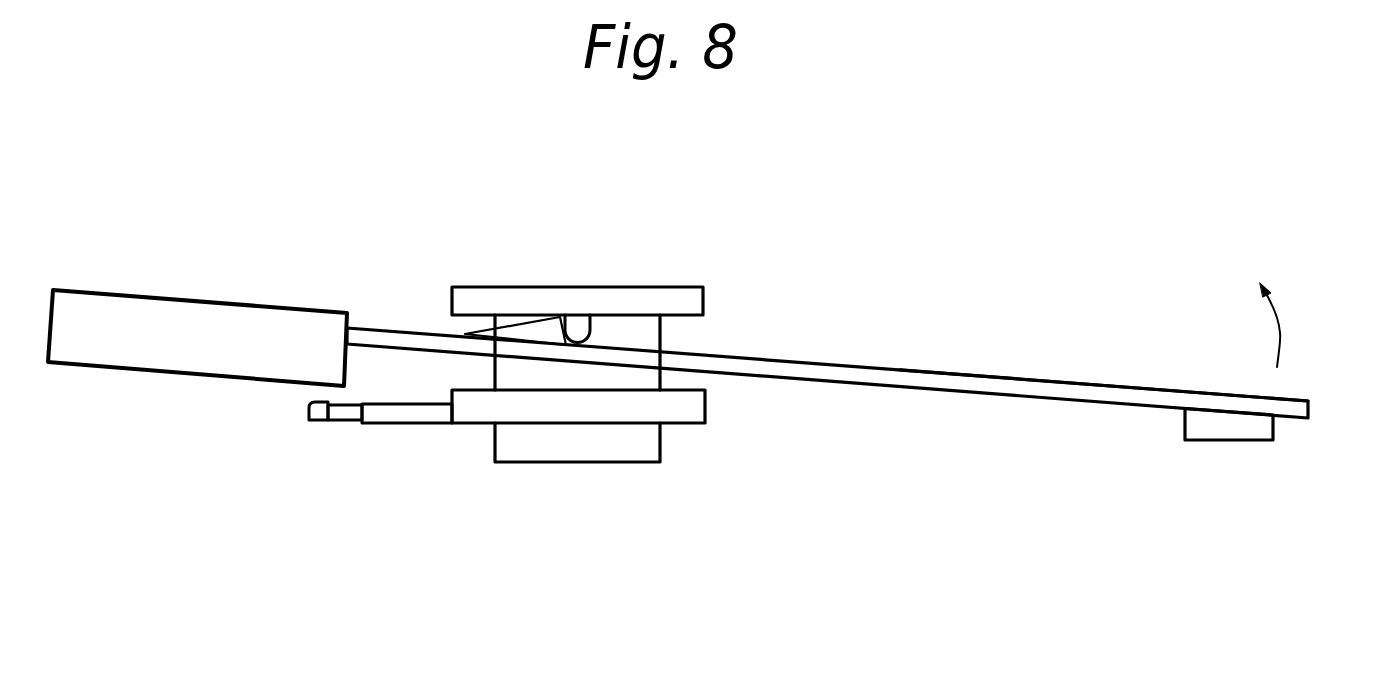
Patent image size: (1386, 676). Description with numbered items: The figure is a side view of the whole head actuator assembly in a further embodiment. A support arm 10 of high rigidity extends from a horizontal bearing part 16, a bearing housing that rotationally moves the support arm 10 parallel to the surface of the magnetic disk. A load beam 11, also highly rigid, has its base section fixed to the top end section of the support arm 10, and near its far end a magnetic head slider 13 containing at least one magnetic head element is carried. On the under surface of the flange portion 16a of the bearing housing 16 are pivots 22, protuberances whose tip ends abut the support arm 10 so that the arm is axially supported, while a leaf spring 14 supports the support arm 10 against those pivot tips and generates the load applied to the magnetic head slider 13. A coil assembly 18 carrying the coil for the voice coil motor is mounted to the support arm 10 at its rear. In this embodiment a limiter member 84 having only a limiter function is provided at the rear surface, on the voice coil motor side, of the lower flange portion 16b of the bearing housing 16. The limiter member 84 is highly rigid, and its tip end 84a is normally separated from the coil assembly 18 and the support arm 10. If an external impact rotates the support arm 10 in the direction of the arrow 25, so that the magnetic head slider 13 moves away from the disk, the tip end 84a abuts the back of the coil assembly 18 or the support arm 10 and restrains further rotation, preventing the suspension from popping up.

The support arm 10 is at (818, 370).
The load beam 11 is at (1027, 387).
The magnetic head slider 13 is at (1230, 428).
The leaf spring 14 is at (475, 334).
The horizontal bearing part 16 is at (532, 452).
The flange portion 16a is at (695, 298).
The lower flange portion 16b is at (475, 410).
The coil assembly 18 is at (107, 353).
The pivots 22 is at (575, 325).
The arrow 25 is at (1280, 330).
The limiter member 84 is at (379, 415).
The tip end 84a is at (318, 401).